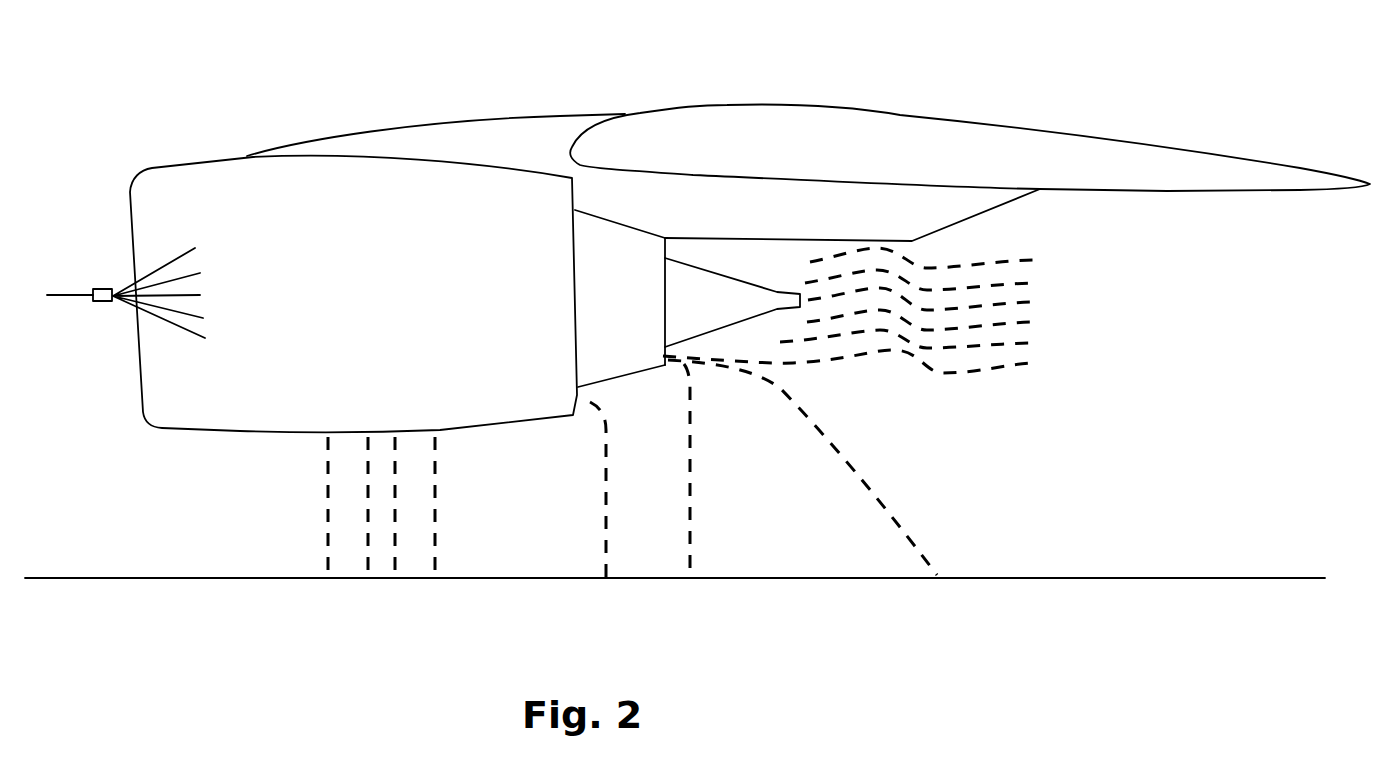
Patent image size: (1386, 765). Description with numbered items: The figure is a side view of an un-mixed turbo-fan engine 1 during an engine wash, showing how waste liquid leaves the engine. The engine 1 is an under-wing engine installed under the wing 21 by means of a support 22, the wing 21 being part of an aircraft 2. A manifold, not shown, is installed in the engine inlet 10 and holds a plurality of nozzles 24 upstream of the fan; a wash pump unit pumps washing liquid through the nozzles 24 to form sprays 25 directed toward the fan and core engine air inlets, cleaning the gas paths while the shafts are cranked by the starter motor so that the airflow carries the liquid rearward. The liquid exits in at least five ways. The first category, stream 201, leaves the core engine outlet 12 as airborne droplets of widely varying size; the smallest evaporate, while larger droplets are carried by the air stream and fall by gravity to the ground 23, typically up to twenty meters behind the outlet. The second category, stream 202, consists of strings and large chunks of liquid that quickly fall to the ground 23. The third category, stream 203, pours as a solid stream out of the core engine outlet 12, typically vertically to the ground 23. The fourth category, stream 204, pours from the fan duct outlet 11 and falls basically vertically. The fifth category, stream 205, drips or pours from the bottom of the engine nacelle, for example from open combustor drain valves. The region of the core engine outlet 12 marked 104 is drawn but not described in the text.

The engine 1 is at (434, 291).
The engine inlet 10 is at (143, 390).
The fan duct outlet 11 is at (575, 197).
The core engine outlet 12 is at (667, 247).
The primary exhaust nozzle 104 is at (695, 292).
The aircraft 2 is at (808, 132).
The wing 21 is at (777, 127).
The support 22 is at (520, 138).
The ground 23 is at (1143, 578).
The nozzles 24 is at (103, 285).
The sprays 25 is at (167, 318).
The stream 201 is at (983, 373).
The stream 202 is at (868, 489).
The stream 203 is at (690, 468).
The stream 204 is at (603, 468).
The stream 205 is at (327, 495).